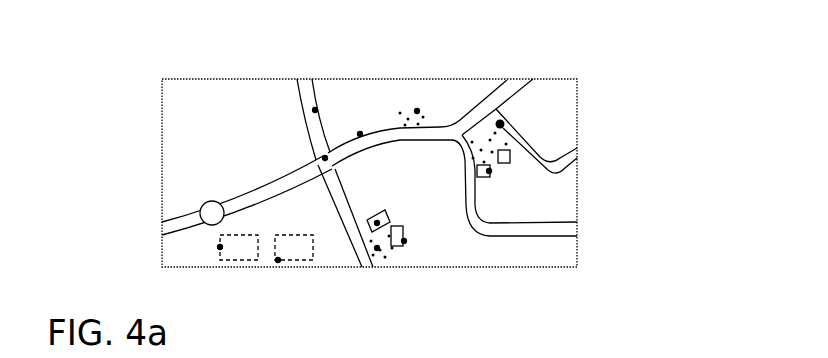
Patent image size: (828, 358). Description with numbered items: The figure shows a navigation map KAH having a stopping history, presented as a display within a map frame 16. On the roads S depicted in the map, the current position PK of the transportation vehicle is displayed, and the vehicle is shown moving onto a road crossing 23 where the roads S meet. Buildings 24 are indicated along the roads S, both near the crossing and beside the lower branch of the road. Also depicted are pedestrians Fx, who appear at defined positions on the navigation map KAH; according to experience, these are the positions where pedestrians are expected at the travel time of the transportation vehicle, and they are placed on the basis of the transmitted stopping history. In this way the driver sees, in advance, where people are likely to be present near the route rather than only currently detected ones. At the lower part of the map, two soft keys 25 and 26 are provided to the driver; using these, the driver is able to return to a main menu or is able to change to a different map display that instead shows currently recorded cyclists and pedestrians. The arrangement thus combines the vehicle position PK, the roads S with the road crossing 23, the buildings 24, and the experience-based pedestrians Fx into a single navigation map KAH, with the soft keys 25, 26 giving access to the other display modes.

The map section / camera image area 16 is at (480, 60).
The road crossing 23 is at (325, 158).
The roads S is at (360, 134).
The pedestrians Fx is at (417, 111).
The buildings 24 is at (377, 223).
The current position PK is at (203, 208).
The soft key 25 is at (220, 247).
The soft key 26 is at (278, 260).
The navigation map having a stopping history KAH is at (633, 57).